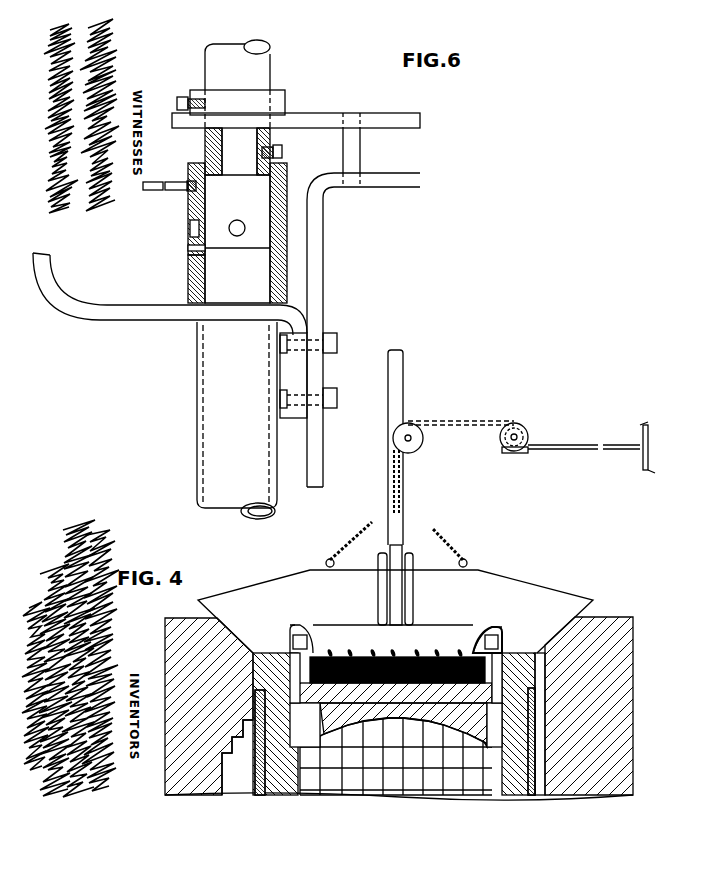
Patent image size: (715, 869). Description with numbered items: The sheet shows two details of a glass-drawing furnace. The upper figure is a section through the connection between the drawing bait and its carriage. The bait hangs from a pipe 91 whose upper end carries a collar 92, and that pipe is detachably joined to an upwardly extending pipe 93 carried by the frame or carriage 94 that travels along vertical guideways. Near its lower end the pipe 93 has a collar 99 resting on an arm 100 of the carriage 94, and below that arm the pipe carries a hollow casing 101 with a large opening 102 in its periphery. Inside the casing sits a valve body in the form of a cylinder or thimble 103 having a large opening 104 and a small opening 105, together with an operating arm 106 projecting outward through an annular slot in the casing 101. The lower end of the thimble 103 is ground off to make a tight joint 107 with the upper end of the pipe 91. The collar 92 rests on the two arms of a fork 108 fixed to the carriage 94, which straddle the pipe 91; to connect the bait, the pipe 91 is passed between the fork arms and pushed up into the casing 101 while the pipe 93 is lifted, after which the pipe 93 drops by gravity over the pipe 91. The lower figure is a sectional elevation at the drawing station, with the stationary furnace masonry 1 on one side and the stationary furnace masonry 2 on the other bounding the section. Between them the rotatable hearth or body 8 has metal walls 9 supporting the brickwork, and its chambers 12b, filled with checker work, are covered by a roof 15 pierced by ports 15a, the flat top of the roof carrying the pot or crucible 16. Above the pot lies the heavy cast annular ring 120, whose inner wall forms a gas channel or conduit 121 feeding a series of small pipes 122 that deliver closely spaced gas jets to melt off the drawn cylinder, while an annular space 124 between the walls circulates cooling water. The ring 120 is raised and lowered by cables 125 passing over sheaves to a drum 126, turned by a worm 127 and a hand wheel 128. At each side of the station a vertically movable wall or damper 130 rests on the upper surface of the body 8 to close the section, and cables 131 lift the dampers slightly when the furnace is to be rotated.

In FIG. 6, the upwardly extending pipe 93 is at (262, 64).
In FIG. 6, the collar 99 is at (283, 93).
In FIG. 6, the arm 100 is at (312, 118).
In FIG. 6, the cylinder or thimble 103 is at (279, 196).
In FIG. 6, the large opening 104 is at (238, 220).
In FIG. 6, the small opening 105 is at (207, 232).
In FIG. 6, the operating arm 106 is at (178, 186).
In FIG. 6, the hollow casing 101 is at (188, 202).
In FIG. 6, the large opening 102 is at (190, 228).
In FIG. 6, the tight joint 107 is at (200, 248).
In FIG. 6, the collar 92 is at (190, 288).
In FIG. 6, the fork 108 is at (177, 318).
In FIG. 6, the pipe 91 is at (217, 431).
In FIG. 6, the frame or carriage 94 is at (322, 218).
In FIG. 4, the left furnace wall 1 is at (173, 628).
In FIG. 4, the right furnace wall 2 is at (630, 716).
In FIG. 4, the rotatable hearth or body 8 is at (267, 663).
In FIG. 4, the inner and outer metal walls 9 is at (260, 768).
In FIG. 4, the roof 15 is at (396, 756).
In FIG. 4, the ports or openings 15a is at (312, 731).
In FIG. 4, the chambers 12b is at (378, 781).
In FIG. 4, the pot or crucible 16 is at (487, 695).
In FIG. 4, the annular ring 120 is at (458, 628).
In FIG. 4, the channel or conduit 121 is at (503, 638).
In FIG. 4, the small pipes 122 is at (347, 652).
In FIG. 4, the annular space 124 is at (500, 627).
In FIG. 4, the cables 125 is at (400, 493).
In FIG. 4, the drum 126 is at (527, 430).
In FIG. 4, the worm 127 is at (526, 453).
In FIG. 4, the hand wheel 128 is at (648, 430).
In FIG. 4, the vertically movable wall or damper 130 is at (510, 583).
In FIG. 4, the cables 131 is at (446, 538).